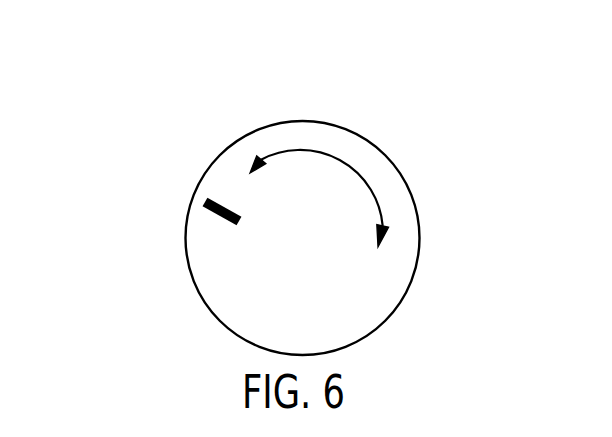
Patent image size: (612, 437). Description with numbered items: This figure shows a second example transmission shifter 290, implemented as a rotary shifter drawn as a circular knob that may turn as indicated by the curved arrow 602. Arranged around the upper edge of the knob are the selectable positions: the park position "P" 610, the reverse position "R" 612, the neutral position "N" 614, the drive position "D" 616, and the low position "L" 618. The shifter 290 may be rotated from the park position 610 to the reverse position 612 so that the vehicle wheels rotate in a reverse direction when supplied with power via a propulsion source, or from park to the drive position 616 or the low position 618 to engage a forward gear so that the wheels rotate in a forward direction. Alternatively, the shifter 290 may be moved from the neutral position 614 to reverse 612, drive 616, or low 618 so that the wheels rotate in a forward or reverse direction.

The transmission shifter 290 is at (200, 295).
The arrow 602 is at (342, 163).
The park position 610 is at (160, 177).
The reverse position 612 is at (193, 137).
The neutral position 614 is at (235, 102).
The drive position 616 is at (285, 85).
The low position 618 is at (347, 92).